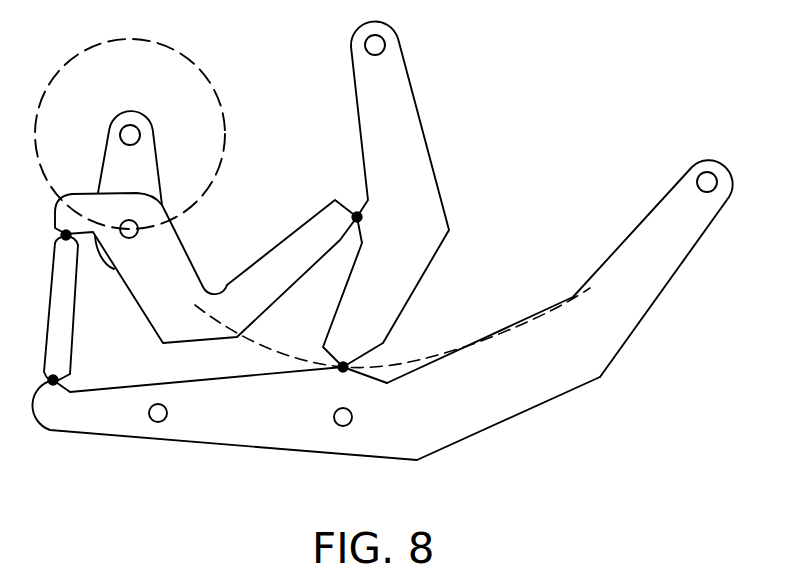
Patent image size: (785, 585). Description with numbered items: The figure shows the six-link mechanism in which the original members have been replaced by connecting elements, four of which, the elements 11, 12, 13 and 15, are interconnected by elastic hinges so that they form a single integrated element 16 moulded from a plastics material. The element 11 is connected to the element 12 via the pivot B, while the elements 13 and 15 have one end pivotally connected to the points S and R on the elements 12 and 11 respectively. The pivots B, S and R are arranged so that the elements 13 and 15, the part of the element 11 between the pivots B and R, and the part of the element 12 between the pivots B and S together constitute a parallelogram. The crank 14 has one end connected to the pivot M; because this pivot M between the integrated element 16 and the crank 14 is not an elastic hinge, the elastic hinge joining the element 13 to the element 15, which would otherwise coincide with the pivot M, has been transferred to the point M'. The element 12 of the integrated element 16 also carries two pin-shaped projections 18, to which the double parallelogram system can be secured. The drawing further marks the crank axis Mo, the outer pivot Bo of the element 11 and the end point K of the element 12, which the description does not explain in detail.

The member 11 is at (428, 153).
The member 12 is at (465, 440).
The member 13 is at (49, 305).
The crank 14 is at (158, 155).
The member 15 is at (200, 283).
The integrated element 16 is at (280, 449).
The pin-shaped projections 18 is at (157, 423).
The crank pivot Mo is at (137, 130).
The pivot M is at (161, 201).
The point M' is at (39, 234).
The pivot S is at (46, 378).
The pivot R is at (353, 212).
The lever pivot Bo is at (385, 45).
The pivot B is at (348, 364).
The rocker end pivot K is at (717, 180).